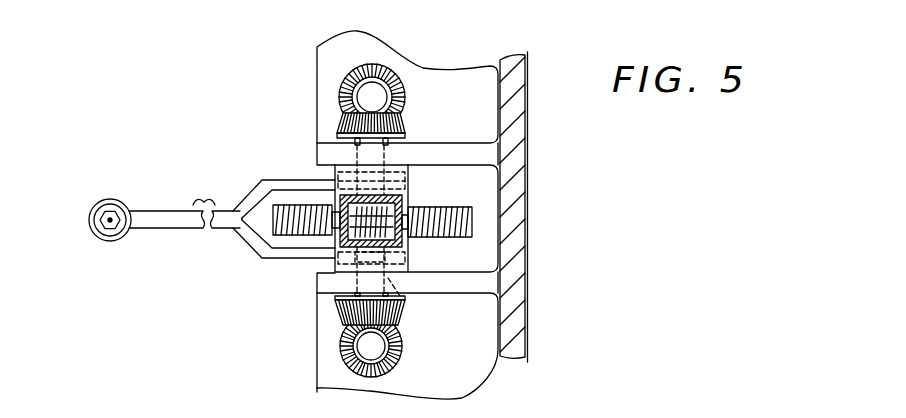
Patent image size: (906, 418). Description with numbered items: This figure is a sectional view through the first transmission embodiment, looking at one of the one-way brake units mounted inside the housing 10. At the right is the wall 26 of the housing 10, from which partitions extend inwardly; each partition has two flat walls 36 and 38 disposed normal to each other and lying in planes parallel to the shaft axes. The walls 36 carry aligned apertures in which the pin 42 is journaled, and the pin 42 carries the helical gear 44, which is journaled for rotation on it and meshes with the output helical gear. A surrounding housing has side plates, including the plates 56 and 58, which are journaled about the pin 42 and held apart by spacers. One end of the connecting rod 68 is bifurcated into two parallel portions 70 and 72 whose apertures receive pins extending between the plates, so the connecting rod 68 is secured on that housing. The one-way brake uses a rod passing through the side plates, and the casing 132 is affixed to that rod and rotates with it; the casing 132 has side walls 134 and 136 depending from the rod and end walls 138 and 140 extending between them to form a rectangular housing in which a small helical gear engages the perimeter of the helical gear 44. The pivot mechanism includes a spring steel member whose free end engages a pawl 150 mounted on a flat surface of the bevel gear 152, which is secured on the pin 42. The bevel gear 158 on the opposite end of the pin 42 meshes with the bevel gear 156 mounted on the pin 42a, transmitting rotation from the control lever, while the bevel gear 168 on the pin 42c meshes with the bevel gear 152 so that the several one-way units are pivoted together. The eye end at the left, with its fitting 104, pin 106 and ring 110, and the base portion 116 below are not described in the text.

The housing 10 is at (530, 343).
The wall 26 is at (510, 223).
The flat wall 36 is at (505, 280).
The flat wall 38 is at (477, 85).
The pin 42 is at (390, 346).
The pin 42a is at (375, 95).
The pin 42c is at (370, 350).
The helical gear 44 is at (282, 206).
The side plate 56 is at (398, 175).
The side plate 58 is at (418, 276).
The connecting rod 68 is at (157, 218).
The bifurcated portion 70 is at (408, 186).
The bifurcated portion 72 is at (405, 266).
The hex fitting 104 is at (110, 205).
The pivot pin 106 is at (98, 220).
The eye end 110 is at (107, 241).
The housing base 116 is at (317, 403).
The casing 132 is at (327, 252).
The side wall 134 is at (400, 248).
The side wall 136 is at (355, 197).
The end wall 138 is at (278, 262).
The end wall 140 is at (403, 207).
The pawl 150 is at (375, 138).
The bevel gear 152 is at (340, 310).
The bevel gear 156 is at (353, 88).
The bevel gear 158 is at (338, 123).
The bevel gear 168 is at (340, 348).